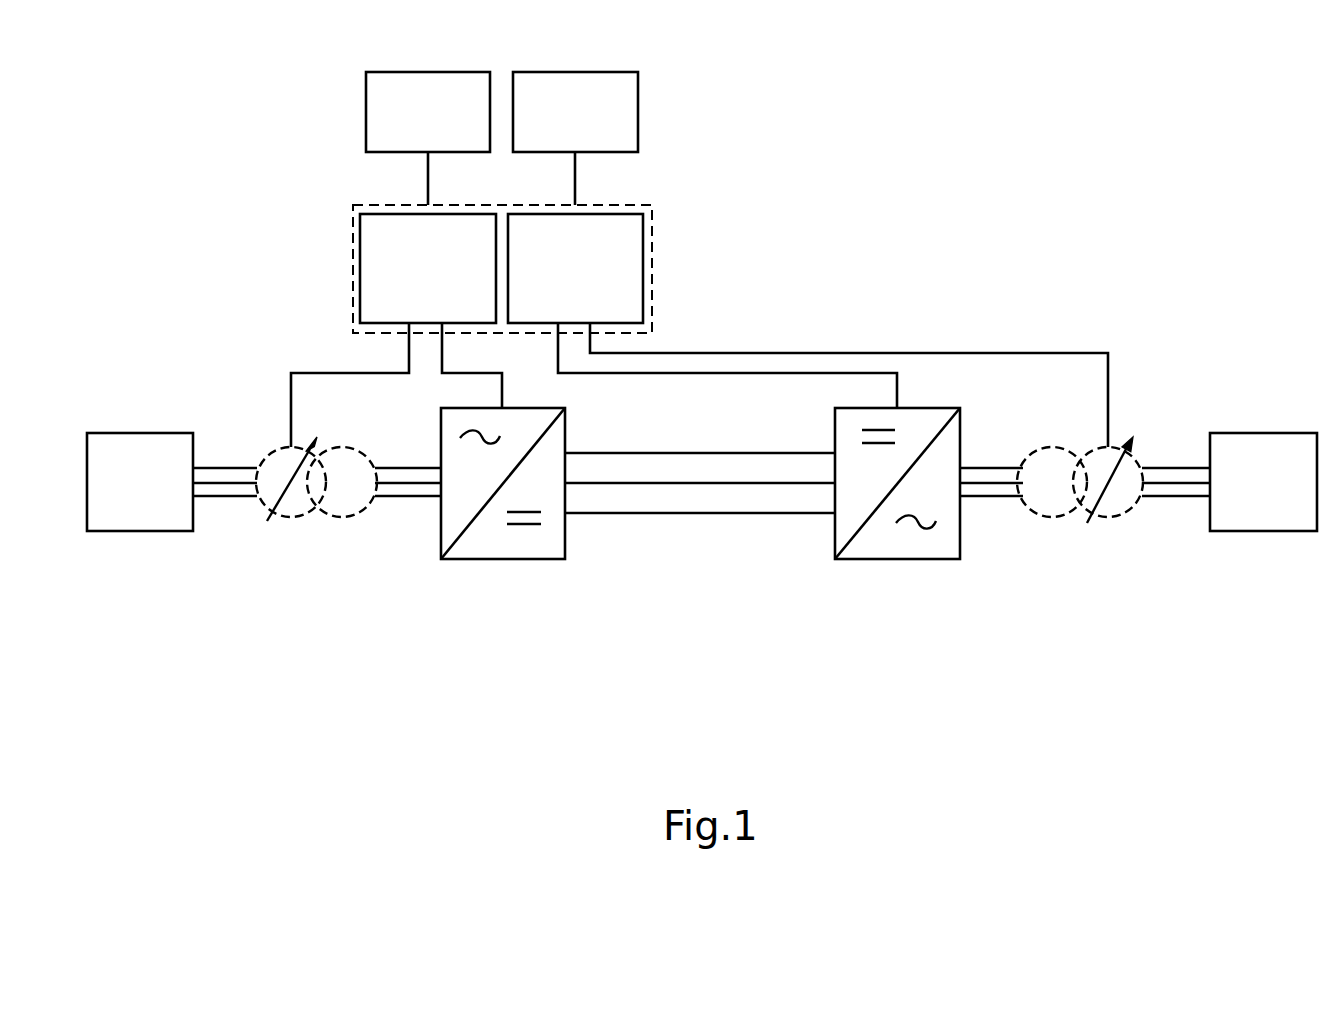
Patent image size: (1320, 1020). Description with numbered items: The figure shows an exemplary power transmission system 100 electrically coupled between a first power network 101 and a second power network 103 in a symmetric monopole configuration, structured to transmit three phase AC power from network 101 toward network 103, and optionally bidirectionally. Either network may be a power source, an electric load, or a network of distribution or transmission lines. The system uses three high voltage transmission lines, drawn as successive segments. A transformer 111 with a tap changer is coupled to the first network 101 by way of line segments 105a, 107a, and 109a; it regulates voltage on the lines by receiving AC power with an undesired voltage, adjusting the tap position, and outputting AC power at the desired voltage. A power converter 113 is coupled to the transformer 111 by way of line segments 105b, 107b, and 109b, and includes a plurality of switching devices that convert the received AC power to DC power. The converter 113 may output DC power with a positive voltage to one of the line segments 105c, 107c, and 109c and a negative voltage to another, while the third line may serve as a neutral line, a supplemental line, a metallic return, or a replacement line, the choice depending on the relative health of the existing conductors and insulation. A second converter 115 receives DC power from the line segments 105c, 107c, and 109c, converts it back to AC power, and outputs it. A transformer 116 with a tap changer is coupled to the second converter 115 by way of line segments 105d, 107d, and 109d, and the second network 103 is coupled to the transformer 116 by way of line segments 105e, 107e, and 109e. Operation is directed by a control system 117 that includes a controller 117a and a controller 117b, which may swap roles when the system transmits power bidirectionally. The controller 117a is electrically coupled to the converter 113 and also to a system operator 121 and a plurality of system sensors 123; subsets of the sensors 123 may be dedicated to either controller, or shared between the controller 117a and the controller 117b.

The power transmission system 100 is at (604, 624).
The first power network 101 is at (168, 433).
The second power network 103 is at (1232, 432).
The line segment 105a is at (235, 500).
The line segment 105b is at (402, 500).
The line segment 105c is at (692, 514).
The line segment 105d is at (995, 500).
The line segment 105e is at (1172, 498).
The line segment 107a is at (220, 482).
The line segment 107b is at (420, 482).
The line segment 107c is at (710, 482).
The line segment 107d is at (987, 482).
The line segment 107e is at (1178, 482).
The line segment 109a is at (245, 465).
The line segment 109b is at (387, 467).
The line segment 109c is at (668, 452).
The line segment 109d is at (1018, 465).
The line segment 109e is at (1143, 465).
The transformer 111 is at (317, 513).
The power converter 113 is at (537, 407).
The second converter 115 is at (928, 407).
The transformer 116 is at (1073, 513).
The control system 117 is at (352, 220).
The controller 117a is at (428, 268).
The controller 117b is at (575, 268).
The system operator 121 is at (390, 72).
The system sensors 123 is at (537, 72).